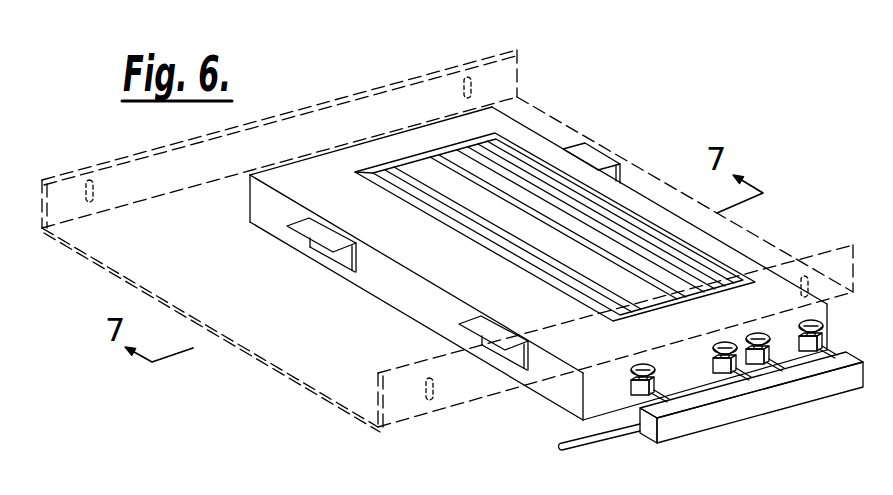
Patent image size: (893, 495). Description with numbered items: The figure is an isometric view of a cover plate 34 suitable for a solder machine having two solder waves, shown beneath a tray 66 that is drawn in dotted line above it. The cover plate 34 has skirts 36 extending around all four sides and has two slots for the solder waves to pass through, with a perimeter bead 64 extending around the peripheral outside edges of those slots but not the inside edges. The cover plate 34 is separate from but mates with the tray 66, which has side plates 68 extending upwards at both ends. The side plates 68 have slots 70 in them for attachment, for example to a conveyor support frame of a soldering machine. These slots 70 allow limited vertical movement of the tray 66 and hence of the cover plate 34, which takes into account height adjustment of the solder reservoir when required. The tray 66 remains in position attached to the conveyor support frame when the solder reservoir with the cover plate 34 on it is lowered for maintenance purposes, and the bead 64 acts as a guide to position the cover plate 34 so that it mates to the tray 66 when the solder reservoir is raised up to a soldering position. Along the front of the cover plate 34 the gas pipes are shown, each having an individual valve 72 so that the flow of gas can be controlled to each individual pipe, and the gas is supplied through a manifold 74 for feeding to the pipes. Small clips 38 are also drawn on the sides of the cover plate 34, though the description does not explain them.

The cover plate 34 is at (518, 130).
The skirts 36 is at (417, 303).
The mounting clip 38 is at (288, 228).
The perimeter bead 64 is at (388, 189).
The tray 66 is at (146, 266).
The side plates 68 is at (185, 154).
The slots 70 is at (82, 180).
The valves 72 is at (640, 365).
The manifold 74 is at (733, 412).